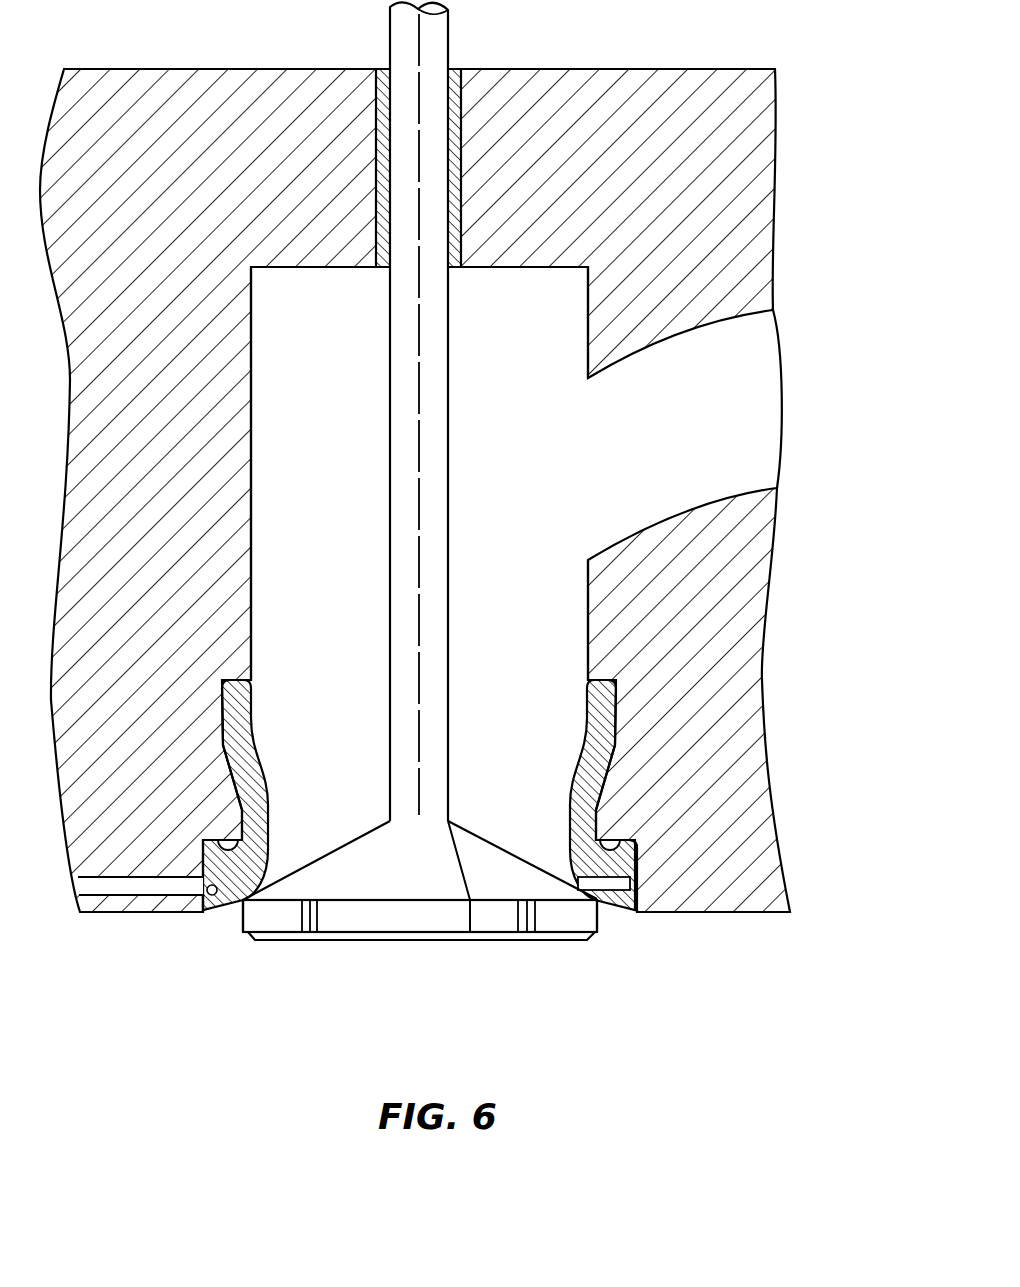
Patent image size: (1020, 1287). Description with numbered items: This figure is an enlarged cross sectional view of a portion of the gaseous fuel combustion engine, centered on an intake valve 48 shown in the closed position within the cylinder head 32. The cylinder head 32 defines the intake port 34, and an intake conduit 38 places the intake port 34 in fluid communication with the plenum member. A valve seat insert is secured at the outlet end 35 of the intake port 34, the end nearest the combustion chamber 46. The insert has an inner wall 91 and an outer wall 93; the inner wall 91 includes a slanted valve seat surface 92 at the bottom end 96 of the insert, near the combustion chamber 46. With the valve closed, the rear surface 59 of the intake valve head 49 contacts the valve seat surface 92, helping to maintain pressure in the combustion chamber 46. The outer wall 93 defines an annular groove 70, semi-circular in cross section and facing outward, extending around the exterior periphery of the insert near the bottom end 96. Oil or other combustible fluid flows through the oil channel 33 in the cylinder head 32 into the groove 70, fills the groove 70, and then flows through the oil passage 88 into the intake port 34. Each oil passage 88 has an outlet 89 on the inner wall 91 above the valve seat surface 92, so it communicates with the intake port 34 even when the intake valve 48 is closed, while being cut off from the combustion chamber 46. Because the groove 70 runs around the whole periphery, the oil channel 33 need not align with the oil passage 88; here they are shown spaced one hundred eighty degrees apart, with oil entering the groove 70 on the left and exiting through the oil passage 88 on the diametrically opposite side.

The cylinder head 32 is at (613, 69).
The intake conduit 38 is at (677, 335).
The intake port 34 is at (498, 541).
The intake valve 48 is at (449, 682).
The inner wall 91 is at (266, 764).
The outer wall 93 is at (603, 800).
The annular groove 70 is at (220, 900).
The oil channel 33 is at (142, 897).
The bottom end 96 is at (201, 911).
The rear surface 59 is at (325, 855).
The outlet end 35 is at (500, 833).
The combustion chamber 46 is at (402, 985).
The intake valve head 49 is at (453, 942).
The valve seat surface 92 is at (247, 900).
The outlet 89 is at (577, 900).
The oil passage 88 is at (633, 861).